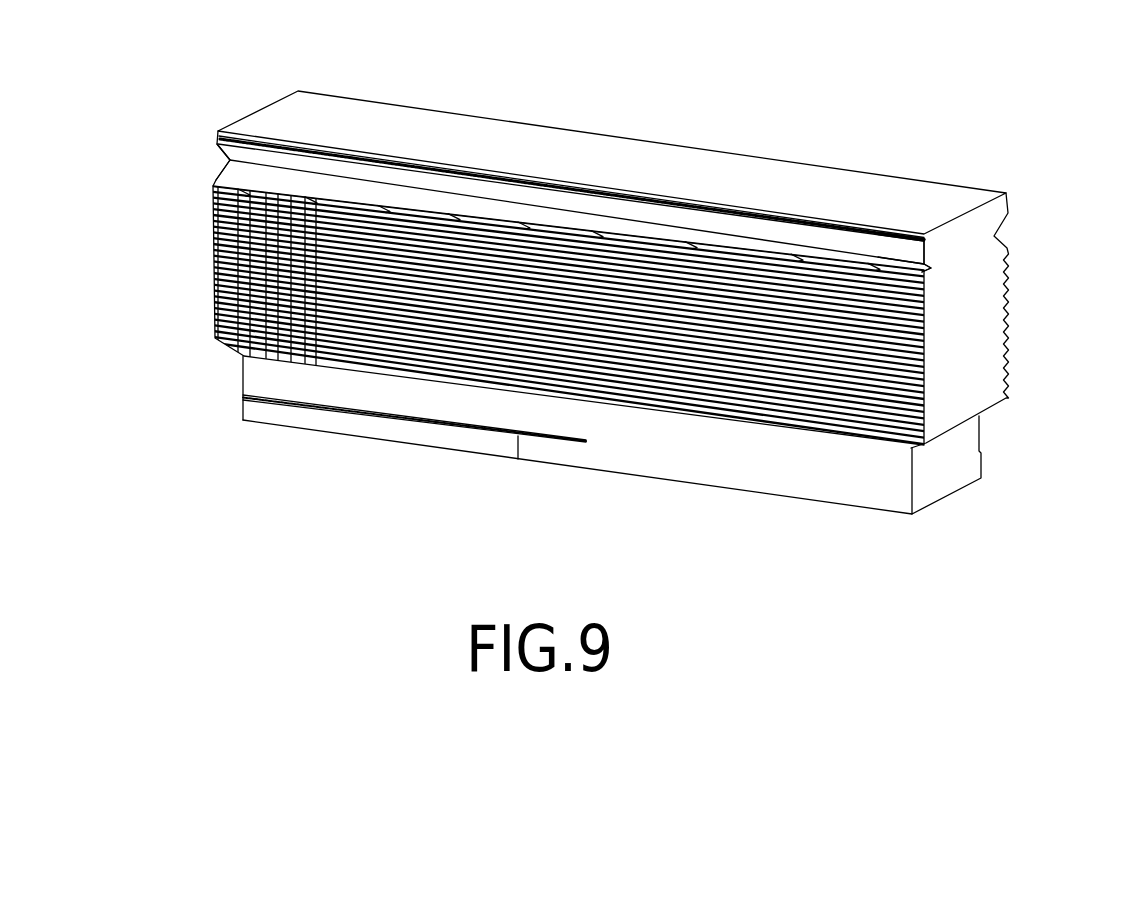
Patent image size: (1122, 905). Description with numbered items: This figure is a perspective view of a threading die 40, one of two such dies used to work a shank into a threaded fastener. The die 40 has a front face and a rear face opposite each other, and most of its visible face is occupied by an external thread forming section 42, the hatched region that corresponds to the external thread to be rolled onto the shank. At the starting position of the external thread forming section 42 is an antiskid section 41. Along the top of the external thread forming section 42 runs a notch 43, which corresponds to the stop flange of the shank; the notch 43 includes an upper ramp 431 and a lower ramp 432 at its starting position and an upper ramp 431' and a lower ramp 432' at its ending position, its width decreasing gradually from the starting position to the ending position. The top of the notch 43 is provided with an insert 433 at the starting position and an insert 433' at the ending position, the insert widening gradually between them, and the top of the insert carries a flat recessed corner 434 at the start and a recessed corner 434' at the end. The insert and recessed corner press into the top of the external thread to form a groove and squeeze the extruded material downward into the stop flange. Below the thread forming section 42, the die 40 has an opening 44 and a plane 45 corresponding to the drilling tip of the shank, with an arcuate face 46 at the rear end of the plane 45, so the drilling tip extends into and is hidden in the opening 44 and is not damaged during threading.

The threading die 40 is at (614, 140).
The antiskid section 41 is at (207, 267).
The external thread forming section 42 is at (667, 380).
The notch 43 is at (294, 152).
The upper ramp 431 is at (190, 156).
The lower ramp 432 is at (531, 212).
The insert 433 is at (533, 163).
The recessed corner 434 is at (572, 140).
The upper ramp 431' is at (868, 179).
The lower ramp 432' is at (980, 305).
The insert 433' is at (980, 274).
The recessed corner 434' is at (919, 176).
The opening 44 is at (270, 365).
The plane 45 is at (387, 418).
The arcuate face 46 is at (543, 445).